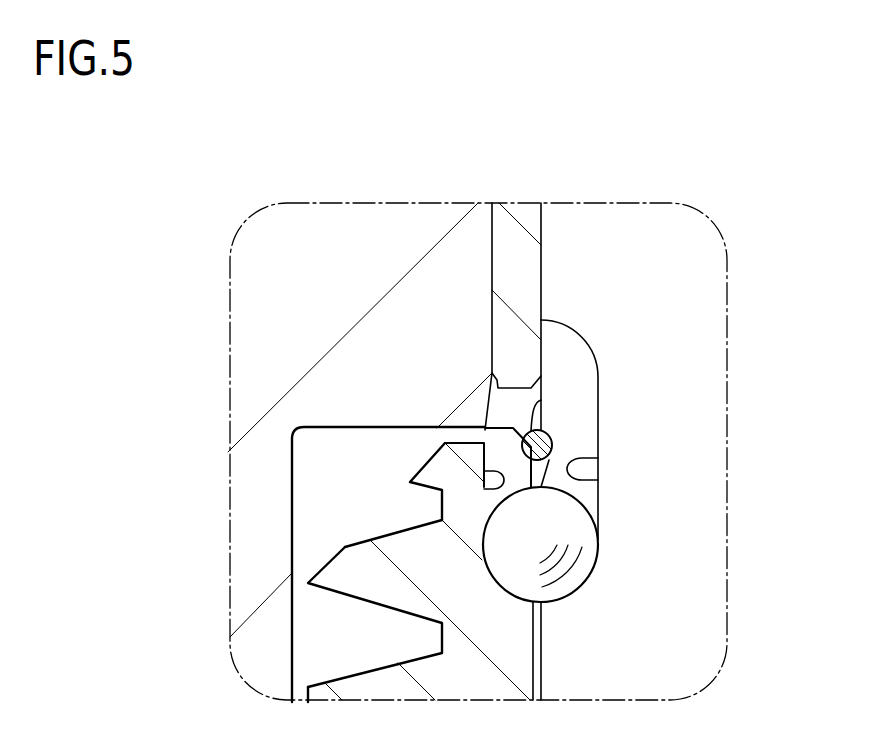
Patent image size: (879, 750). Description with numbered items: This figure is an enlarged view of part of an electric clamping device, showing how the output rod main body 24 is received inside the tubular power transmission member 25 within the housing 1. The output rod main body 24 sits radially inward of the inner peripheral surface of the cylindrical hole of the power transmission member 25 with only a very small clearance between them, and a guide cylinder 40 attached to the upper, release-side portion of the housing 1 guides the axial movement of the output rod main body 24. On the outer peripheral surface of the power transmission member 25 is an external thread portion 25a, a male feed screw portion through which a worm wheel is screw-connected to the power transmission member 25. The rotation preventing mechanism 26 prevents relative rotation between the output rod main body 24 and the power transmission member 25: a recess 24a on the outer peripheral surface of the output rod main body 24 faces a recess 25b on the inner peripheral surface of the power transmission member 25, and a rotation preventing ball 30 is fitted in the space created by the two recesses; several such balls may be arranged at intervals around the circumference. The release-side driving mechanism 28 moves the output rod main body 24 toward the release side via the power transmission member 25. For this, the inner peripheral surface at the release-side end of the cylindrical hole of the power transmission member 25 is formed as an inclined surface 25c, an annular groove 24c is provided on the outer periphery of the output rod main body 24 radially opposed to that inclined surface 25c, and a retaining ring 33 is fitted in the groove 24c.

The housing 1 is at (275, 245).
The output rod main body 24 is at (521, 451).
The recess 24a is at (598, 477).
The annular groove 24c is at (541, 400).
The power transmission member 25 is at (411, 537).
The external thread portion 25a is at (372, 603).
The recess 25b is at (497, 477).
The inclined surface 25c is at (528, 436).
The rotation preventing mechanism 26 is at (608, 562).
The release-side driving mechanism 28 is at (555, 433).
The rotation preventing ball 30 is at (567, 529).
The retaining ring 33 is at (553, 442).
The guide cylinder 40 is at (524, 222).